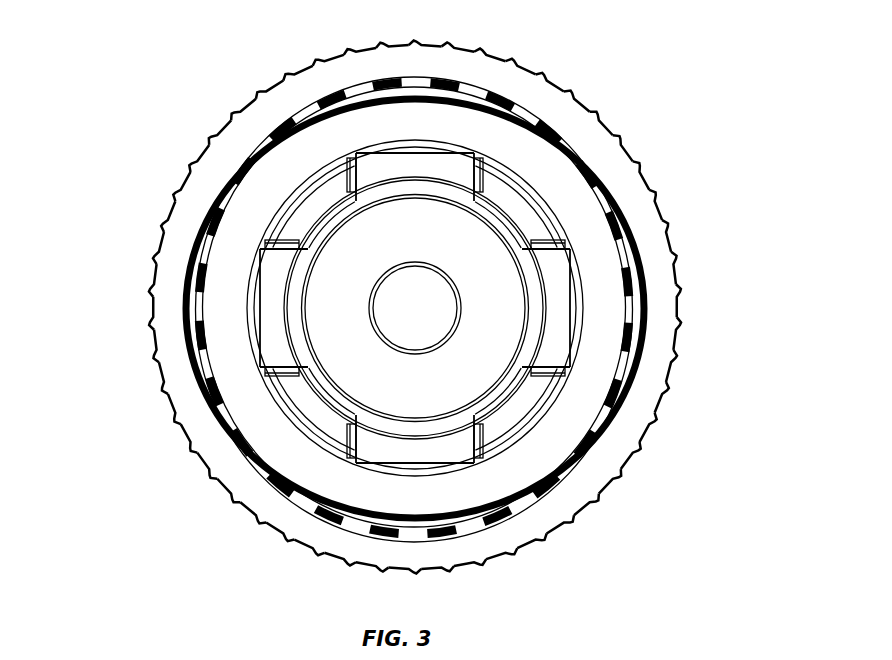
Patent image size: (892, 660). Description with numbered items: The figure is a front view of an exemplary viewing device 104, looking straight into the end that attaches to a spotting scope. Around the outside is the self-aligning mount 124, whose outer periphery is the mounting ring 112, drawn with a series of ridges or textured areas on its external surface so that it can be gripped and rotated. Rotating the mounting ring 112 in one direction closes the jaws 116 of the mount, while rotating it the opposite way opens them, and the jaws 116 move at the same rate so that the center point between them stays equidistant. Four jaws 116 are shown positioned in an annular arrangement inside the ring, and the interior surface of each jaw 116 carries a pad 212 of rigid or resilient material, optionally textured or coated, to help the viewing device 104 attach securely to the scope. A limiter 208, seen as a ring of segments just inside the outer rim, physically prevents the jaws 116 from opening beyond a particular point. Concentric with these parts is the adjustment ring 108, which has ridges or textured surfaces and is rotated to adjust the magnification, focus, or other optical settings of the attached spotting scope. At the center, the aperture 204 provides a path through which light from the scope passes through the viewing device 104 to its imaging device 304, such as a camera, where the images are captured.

The viewing device 104 is at (104, 319).
The adjustment ring 108 is at (445, 294).
The mounting ring 112 is at (546, 503).
The jaws 116 is at (413, 149).
The self-aligning mount 124 is at (686, 385).
The aperture 204 is at (322, 241).
The limiter 208 is at (512, 97).
The pad 212 is at (462, 206).
The imaging device 304 is at (436, 319).